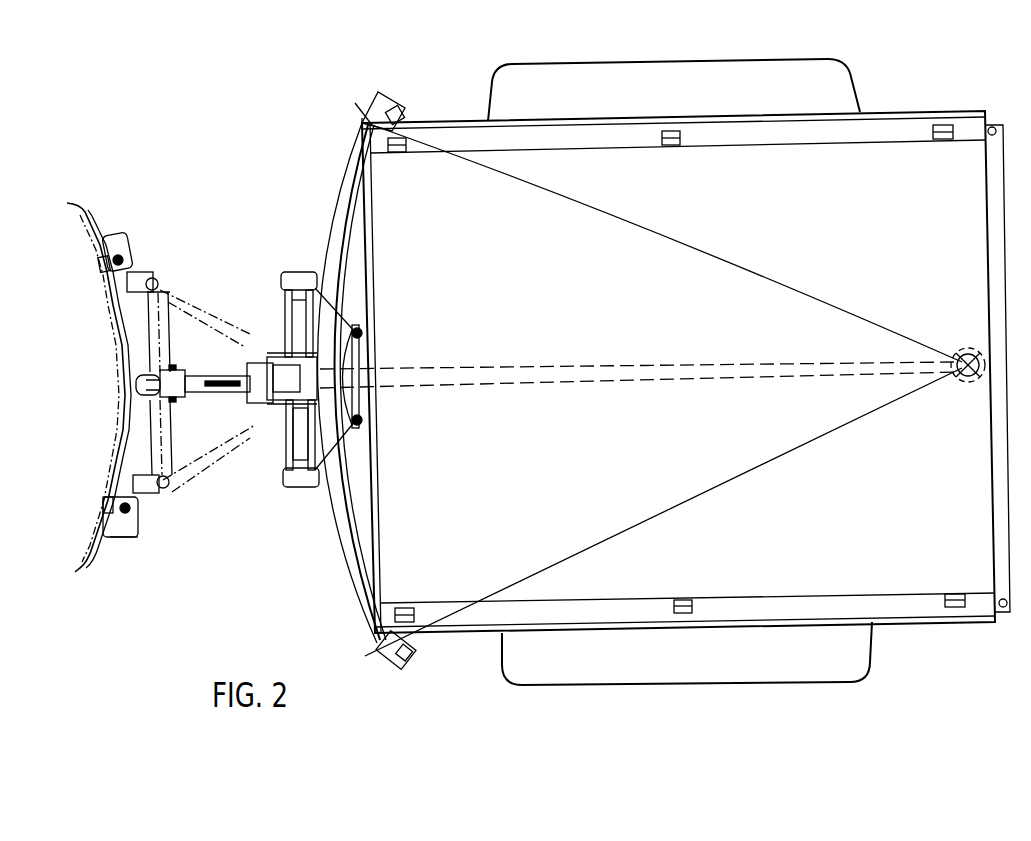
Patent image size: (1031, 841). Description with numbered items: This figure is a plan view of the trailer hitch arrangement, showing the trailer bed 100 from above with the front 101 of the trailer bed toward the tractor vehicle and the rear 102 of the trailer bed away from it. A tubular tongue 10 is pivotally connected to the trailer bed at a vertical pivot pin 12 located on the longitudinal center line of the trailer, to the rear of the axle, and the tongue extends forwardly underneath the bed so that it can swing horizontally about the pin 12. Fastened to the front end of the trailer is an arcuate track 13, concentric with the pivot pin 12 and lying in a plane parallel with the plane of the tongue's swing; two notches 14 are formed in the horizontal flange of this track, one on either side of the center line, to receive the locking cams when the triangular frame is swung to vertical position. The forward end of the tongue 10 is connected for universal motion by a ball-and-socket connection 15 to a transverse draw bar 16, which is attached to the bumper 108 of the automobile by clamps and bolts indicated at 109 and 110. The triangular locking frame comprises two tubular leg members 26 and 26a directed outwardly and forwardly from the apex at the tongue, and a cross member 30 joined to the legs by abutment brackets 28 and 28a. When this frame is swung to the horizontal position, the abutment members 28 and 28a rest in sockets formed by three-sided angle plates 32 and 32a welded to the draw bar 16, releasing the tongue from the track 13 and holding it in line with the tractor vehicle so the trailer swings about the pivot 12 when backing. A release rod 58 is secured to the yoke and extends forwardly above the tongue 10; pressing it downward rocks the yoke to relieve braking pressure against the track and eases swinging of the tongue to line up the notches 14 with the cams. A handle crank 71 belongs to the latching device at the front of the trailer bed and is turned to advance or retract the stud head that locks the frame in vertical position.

The tubular tongue 10 is at (648, 362).
The vertical pivot pin 12 is at (958, 350).
The arcuate track 13 is at (340, 510).
The notches 14 is at (372, 318).
The ball-and-socket connection 15 is at (136, 383).
The transverse draw bar 16 is at (127, 537).
The leg member 26 is at (288, 315).
The leg member 26a is at (287, 440).
The abutment bracket 28 is at (283, 278).
The abutment bracket 28a is at (300, 482).
The cross member 30 is at (295, 448).
The three-sided angle plate 32 is at (150, 272).
The three-sided angle plate 32a is at (145, 492).
The release rod 58 is at (222, 392).
The handle crank 71 is at (250, 367).
The trailer bed 100 is at (897, 162).
The front of the trailer bed 101 is at (362, 223).
The rear of the trailer bed 102 is at (985, 200).
The bumper 108 is at (118, 455).
The clamps and bolts 109 is at (100, 268).
The clamps and bolts 110 is at (103, 505).